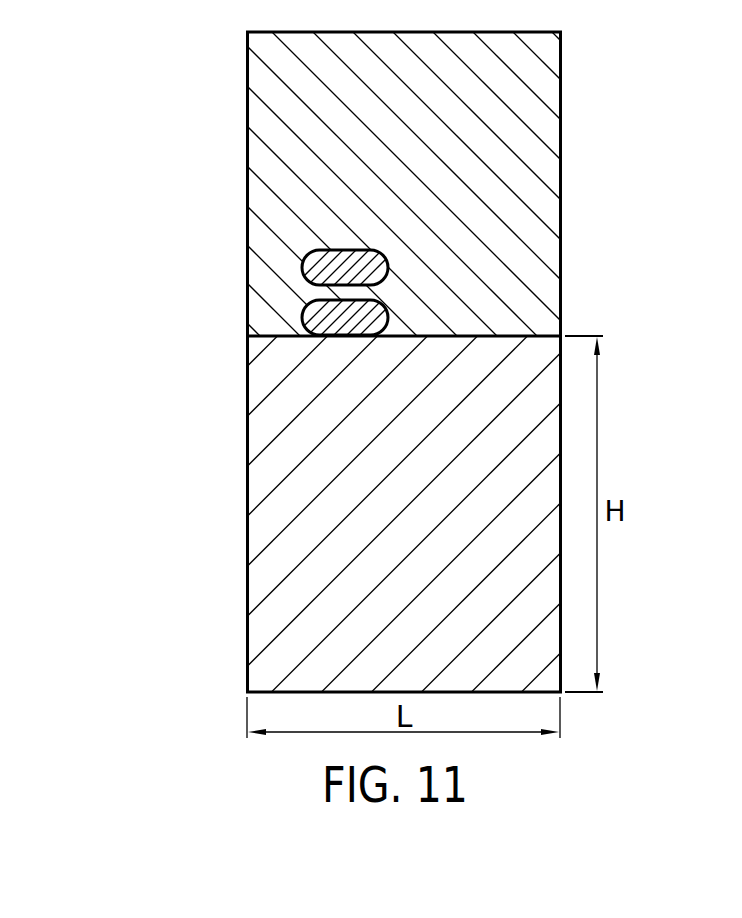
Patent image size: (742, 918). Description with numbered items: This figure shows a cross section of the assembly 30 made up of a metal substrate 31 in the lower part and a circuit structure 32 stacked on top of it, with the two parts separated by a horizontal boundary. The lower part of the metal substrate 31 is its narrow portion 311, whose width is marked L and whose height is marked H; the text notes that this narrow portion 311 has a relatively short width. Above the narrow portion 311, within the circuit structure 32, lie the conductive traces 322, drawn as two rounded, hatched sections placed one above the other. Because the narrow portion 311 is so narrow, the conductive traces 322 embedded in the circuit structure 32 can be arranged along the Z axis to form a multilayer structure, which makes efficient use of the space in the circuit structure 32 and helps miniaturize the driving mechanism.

The heat dissipation structure 30 is at (151, 278).
The metal substrate 31 is at (247, 385).
The circuit structure 32 is at (247, 295).
The narrow portion 311 is at (277, 568).
The conductive traces 322 is at (365, 270).